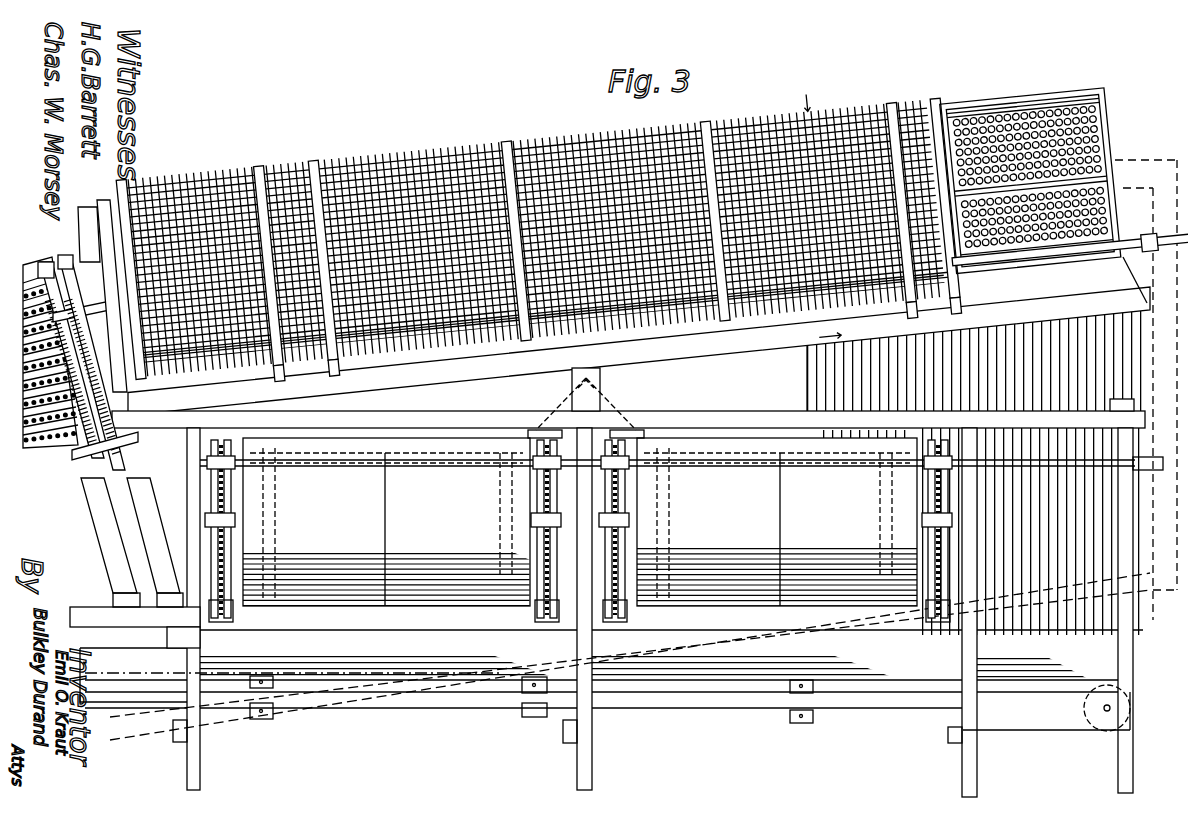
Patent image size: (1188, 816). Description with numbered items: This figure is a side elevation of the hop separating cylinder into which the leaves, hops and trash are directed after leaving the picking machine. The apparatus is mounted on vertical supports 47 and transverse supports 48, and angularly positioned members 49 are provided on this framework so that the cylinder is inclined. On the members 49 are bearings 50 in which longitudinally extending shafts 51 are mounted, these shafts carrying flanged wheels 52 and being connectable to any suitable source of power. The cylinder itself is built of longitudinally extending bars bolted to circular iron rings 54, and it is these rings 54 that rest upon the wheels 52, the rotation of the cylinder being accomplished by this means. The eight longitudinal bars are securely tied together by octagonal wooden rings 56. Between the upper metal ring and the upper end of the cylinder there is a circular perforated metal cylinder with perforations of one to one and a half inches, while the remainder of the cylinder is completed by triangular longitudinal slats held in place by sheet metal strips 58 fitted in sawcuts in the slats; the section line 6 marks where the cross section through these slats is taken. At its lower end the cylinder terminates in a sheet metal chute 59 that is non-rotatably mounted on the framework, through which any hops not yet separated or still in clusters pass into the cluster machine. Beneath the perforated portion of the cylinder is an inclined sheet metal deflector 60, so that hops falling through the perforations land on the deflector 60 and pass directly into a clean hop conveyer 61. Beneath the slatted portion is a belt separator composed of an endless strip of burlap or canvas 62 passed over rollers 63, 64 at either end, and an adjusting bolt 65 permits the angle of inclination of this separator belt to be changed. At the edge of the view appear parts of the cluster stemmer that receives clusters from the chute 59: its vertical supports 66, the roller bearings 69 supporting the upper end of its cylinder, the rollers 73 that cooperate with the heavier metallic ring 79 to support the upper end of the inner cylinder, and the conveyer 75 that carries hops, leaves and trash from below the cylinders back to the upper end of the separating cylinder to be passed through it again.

The section line 6 is at (818, 217).
The vertical supports 47 is at (1128, 532).
The transverse supports 48 is at (600, 385).
The angularly positioned members 49 is at (701, 334).
The bearings 50 is at (1036, 284).
The longitudinally extending shafts 51 is at (545, 340).
The flanged wheels 52 is at (630, 349).
The circular iron rings 54 is at (539, 226).
The octagonal wooden rings 56 is at (583, 217).
The metal strips 58 is at (531, 220).
The sheet metal chute 59 is at (102, 204).
The inclined sheet metal deflector 60 is at (975, 438).
The clean hop conveyer 61 is at (1037, 724).
The endless strip of burlap or canvas 62 is at (580, 522).
The roller 63 is at (577, 527).
The roller 64 is at (330, 545).
The adjusting bolt 65 is at (245, 535).
The vertical supports 66 is at (187, 488).
The roller bearings 69 is at (136, 459).
The rollers 73 is at (72, 282).
The conveyer 75 is at (1146, 402).
The heavier metallic ring 79 is at (46, 262).